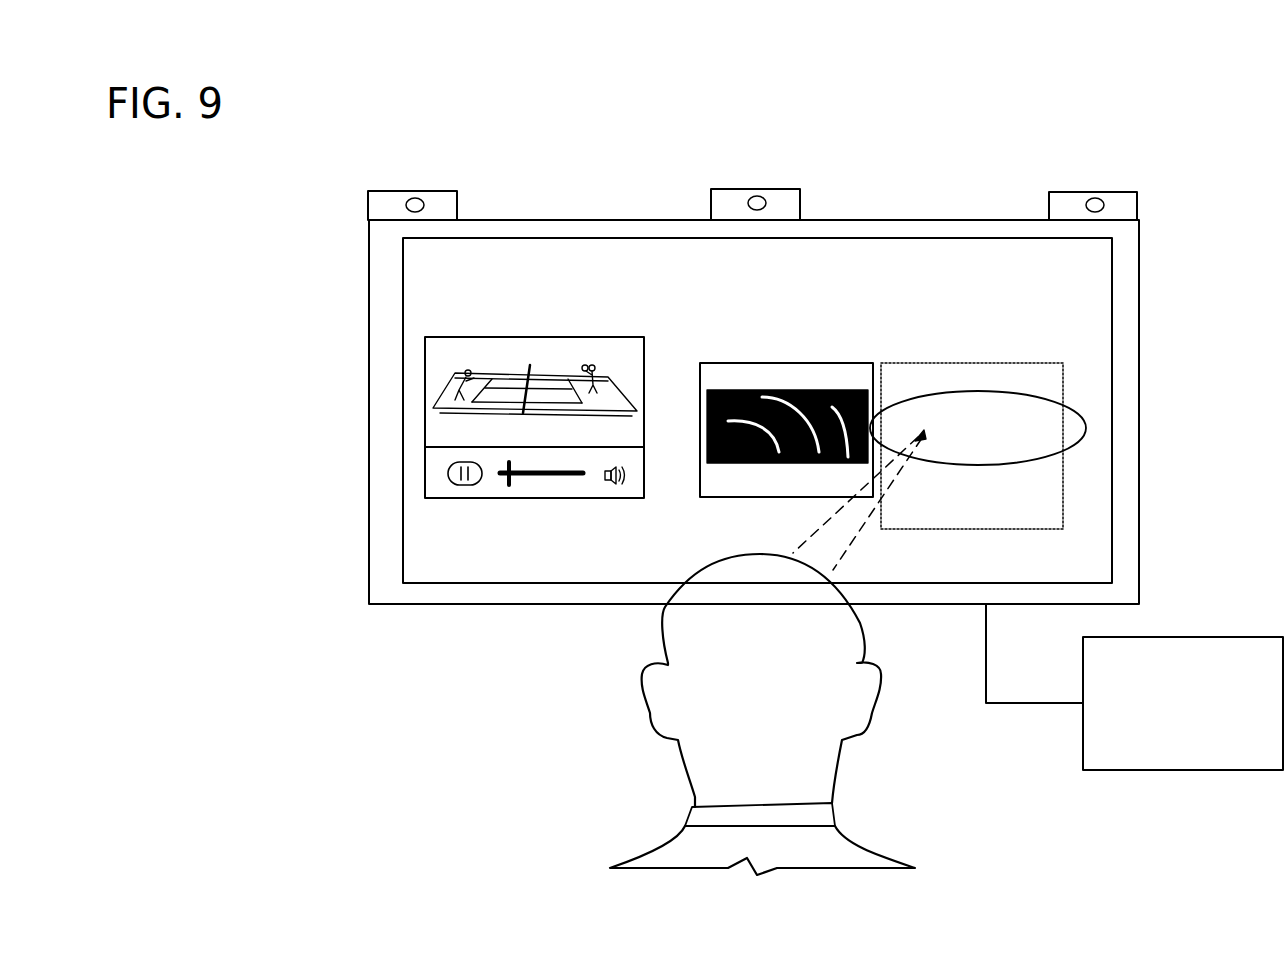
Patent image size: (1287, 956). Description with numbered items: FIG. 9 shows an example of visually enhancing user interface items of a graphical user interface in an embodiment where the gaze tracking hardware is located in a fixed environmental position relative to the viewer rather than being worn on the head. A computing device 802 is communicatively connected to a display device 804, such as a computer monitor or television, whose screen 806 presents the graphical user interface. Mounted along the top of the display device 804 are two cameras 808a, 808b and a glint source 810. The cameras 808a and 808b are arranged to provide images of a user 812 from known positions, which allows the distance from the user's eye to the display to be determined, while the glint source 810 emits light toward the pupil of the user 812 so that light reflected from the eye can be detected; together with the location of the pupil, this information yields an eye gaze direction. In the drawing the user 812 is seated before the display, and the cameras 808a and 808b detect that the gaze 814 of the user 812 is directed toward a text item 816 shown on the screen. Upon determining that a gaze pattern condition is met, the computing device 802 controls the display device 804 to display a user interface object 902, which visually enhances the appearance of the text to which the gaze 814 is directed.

The computing device 802 is at (1245, 727).
The display device 804 is at (873, 218).
The display screen 806 is at (426, 258).
The camera 808a is at (393, 191).
The camera 808b is at (1068, 192).
The glint source 810 is at (738, 189).
The user 812 is at (775, 653).
The gaze 814 is at (837, 510).
The text item 816 is at (968, 362).
The user interface object 902 is at (1083, 417).